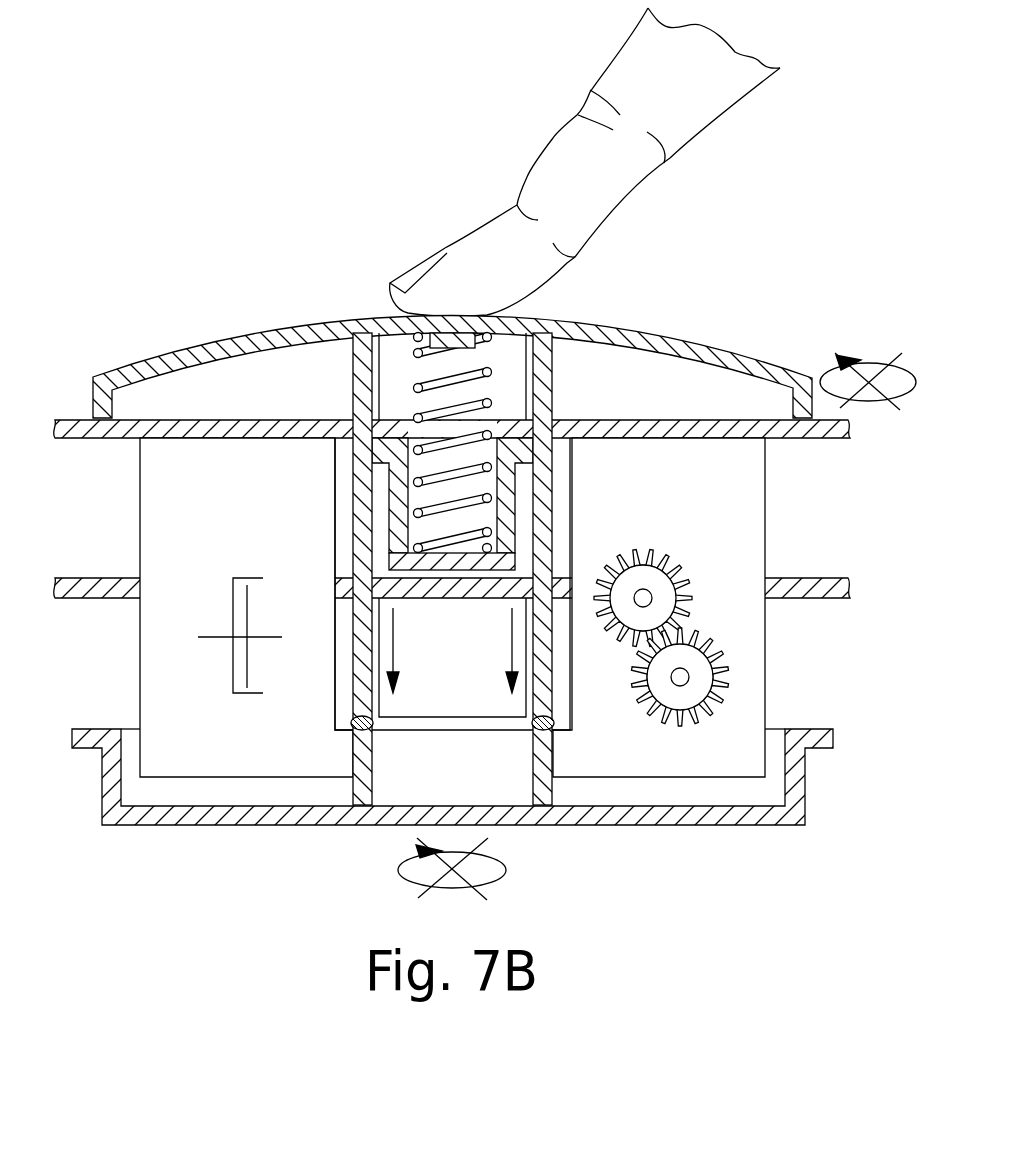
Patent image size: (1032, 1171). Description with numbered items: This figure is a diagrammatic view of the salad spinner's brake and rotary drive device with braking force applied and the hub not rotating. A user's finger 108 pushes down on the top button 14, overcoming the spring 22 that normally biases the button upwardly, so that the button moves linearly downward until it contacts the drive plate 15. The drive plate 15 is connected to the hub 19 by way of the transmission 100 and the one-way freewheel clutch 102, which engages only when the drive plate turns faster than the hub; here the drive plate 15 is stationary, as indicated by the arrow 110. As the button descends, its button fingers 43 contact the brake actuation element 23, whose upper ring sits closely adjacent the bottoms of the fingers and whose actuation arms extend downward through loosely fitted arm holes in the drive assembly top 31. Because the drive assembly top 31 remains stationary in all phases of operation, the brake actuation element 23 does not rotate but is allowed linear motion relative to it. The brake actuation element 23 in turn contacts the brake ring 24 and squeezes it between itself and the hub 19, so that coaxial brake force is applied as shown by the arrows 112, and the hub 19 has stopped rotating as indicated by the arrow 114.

The top button 14 is at (710, 344).
The drive plate 15 is at (80, 421).
The hub 19 is at (215, 827).
The spring 22 is at (455, 380).
The brake actuation element 23 is at (553, 507).
The brake ring 24 is at (556, 724).
The drive assembly top 31 is at (820, 600).
The button fingers 43 is at (353, 385).
The transmission 100 is at (748, 531).
The one-way freewheel clutch 102 is at (156, 530).
The user's finger 108 is at (563, 148).
The arrow 110 is at (873, 402).
The arrows 112 is at (393, 643).
The arrow 114 is at (507, 868).